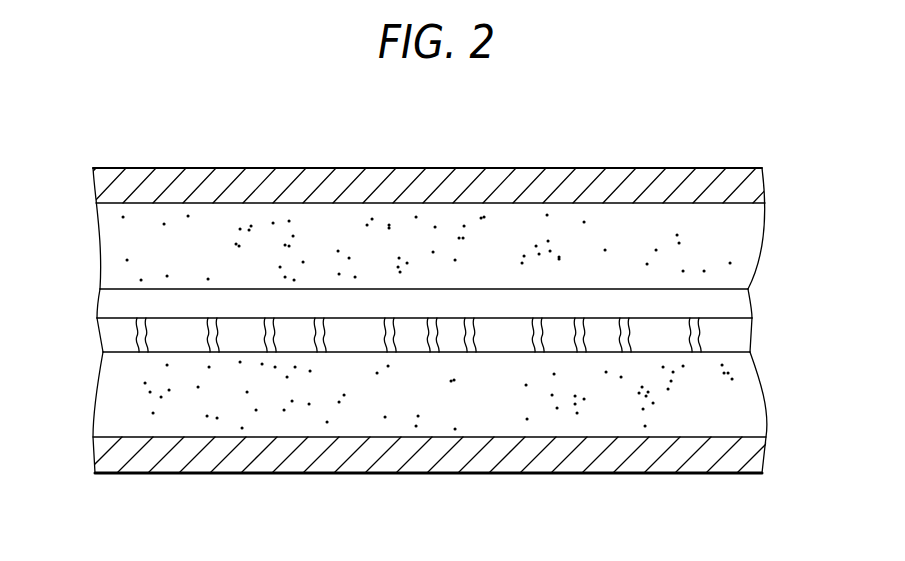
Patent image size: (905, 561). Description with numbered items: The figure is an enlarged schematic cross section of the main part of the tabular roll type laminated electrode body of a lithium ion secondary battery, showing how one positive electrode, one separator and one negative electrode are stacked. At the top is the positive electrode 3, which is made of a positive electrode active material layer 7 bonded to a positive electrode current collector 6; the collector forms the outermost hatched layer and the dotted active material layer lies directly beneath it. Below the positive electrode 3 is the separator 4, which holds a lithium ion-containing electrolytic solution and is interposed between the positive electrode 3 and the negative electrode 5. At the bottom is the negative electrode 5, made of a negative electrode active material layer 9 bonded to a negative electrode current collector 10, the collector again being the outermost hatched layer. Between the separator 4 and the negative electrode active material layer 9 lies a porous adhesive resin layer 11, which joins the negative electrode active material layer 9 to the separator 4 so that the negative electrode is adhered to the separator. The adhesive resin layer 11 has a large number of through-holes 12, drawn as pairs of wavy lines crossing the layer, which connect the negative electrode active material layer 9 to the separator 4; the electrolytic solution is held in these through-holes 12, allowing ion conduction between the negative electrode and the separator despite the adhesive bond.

The positive electrode 3 is at (826, 170).
The separator 4 is at (744, 310).
The negative electrode 5 is at (826, 362).
The positive electrode current collector 6 is at (738, 192).
The positive electrode active material layer 7 is at (742, 254).
The negative electrode active material layer 9 is at (742, 399).
The negative electrode current collector 10 is at (742, 459).
The porous adhesive resin layer 11 is at (108, 333).
The through-holes 12 is at (700, 340).